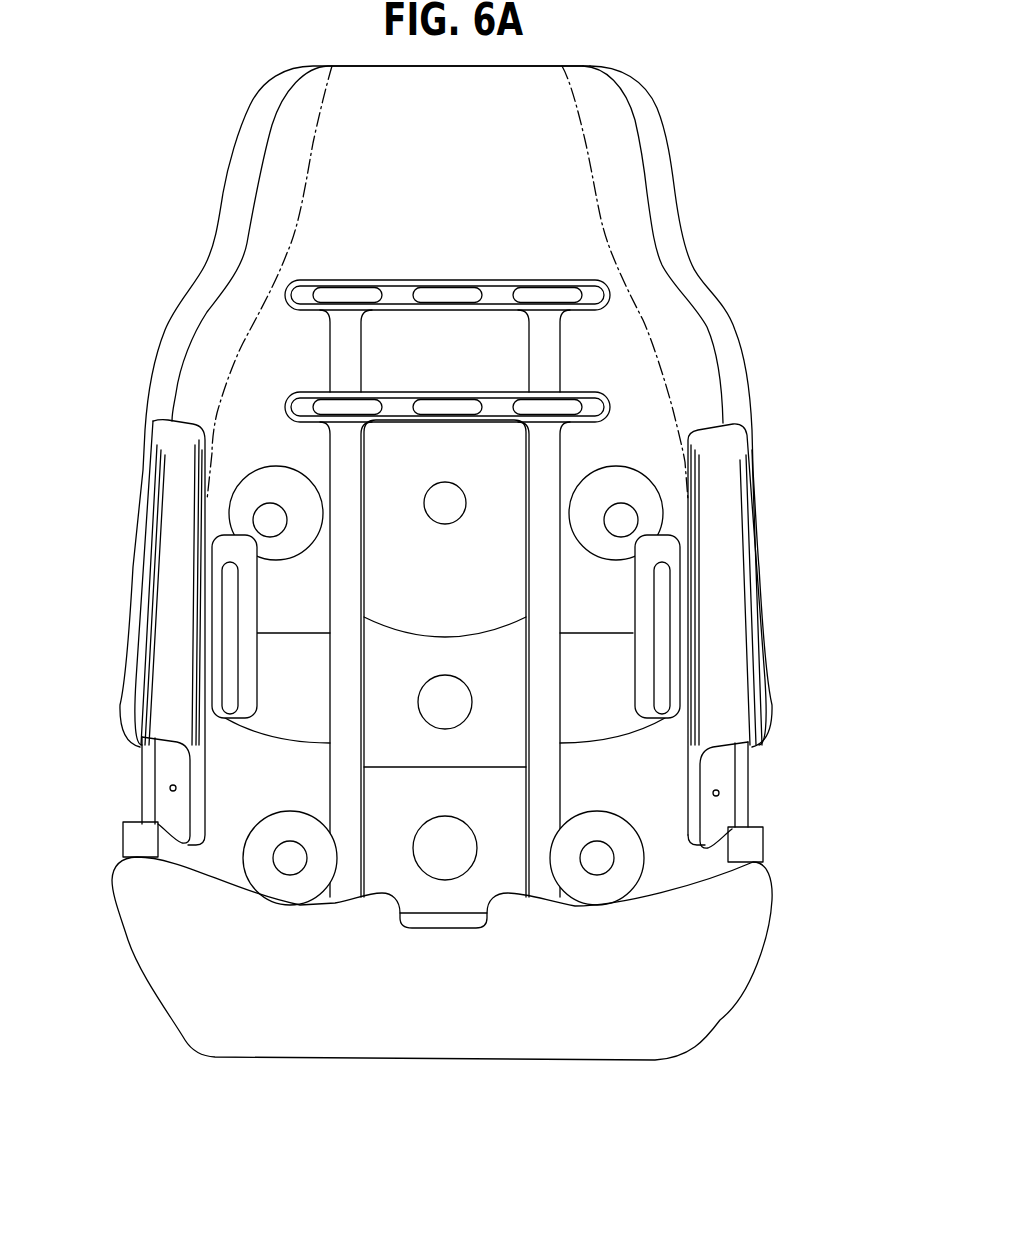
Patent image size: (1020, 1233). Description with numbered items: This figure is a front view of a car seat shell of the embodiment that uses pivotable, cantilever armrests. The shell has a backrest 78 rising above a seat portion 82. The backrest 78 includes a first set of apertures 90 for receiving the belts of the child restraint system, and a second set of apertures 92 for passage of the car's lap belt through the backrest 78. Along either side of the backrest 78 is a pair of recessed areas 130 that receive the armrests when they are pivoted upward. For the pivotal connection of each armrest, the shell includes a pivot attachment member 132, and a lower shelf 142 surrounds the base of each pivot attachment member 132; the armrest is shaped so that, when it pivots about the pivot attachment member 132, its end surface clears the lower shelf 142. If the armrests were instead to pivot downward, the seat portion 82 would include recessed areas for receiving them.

The backrest 78 is at (562, 217).
The first set of apertures 90 is at (367, 292).
The recessed areas 130 is at (163, 605).
The second set of apertures 92 is at (232, 648).
The pivot attachment member 132 is at (145, 775).
The lower shelf 142 is at (131, 818).
The seat portion 82 is at (748, 932).